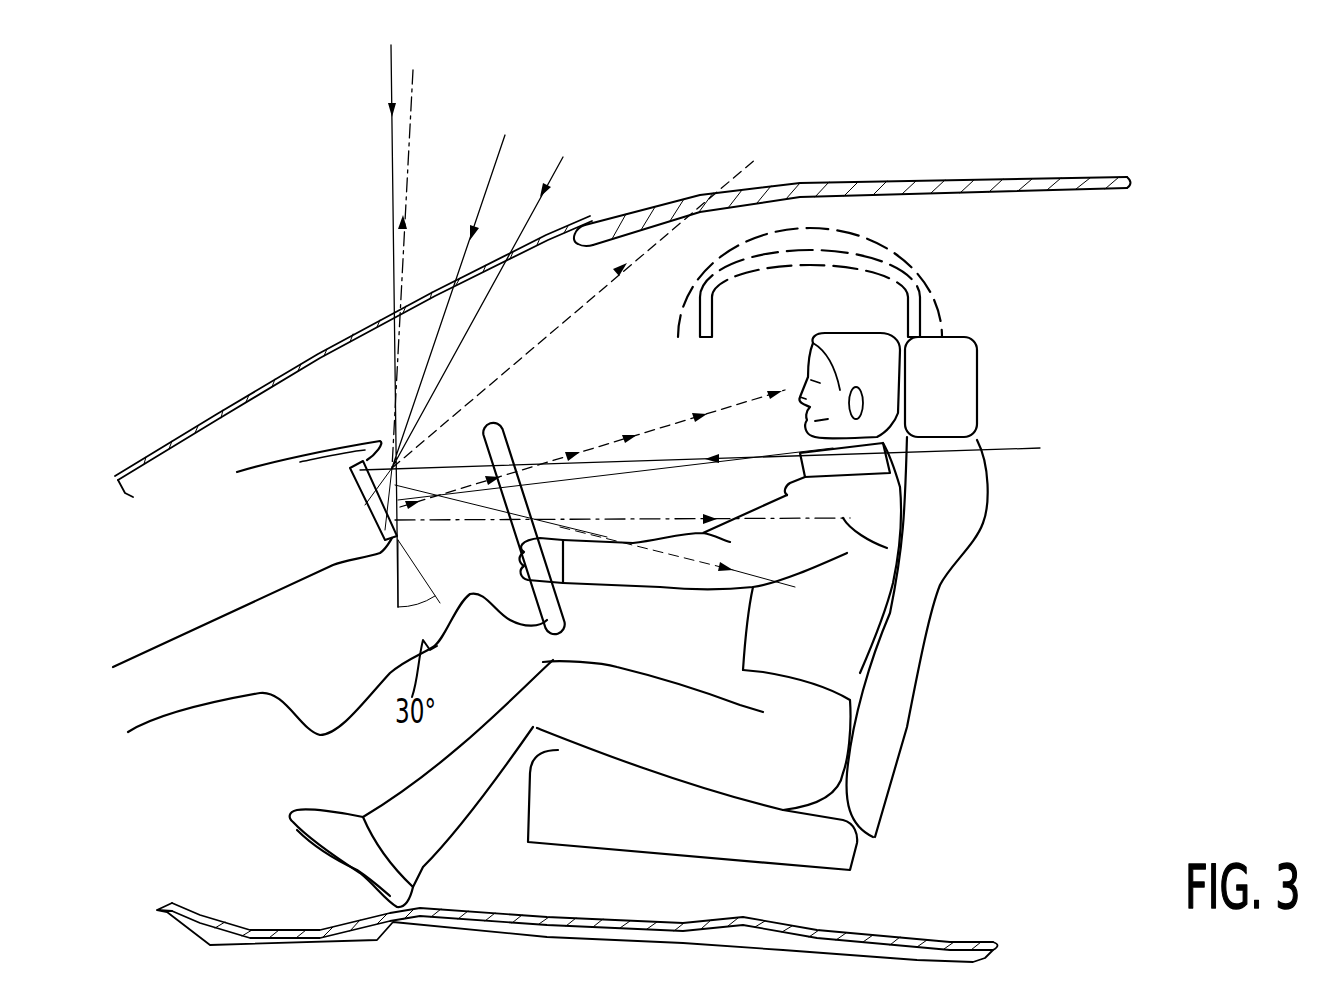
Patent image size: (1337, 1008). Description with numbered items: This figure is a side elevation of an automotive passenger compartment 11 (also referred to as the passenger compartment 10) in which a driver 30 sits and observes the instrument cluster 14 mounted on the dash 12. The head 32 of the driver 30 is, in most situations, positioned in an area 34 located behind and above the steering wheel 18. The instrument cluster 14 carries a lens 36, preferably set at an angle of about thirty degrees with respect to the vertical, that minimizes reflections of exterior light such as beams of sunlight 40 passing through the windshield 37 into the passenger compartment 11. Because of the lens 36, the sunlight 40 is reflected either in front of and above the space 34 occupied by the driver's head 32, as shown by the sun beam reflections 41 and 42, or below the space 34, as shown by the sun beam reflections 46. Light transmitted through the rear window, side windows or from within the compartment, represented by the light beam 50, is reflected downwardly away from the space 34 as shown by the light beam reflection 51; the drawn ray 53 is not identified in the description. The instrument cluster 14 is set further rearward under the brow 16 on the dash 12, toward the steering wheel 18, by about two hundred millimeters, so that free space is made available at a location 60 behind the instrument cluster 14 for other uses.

The passenger compartment 10 is at (532, 341).
The passenger compartment 11 is at (868, 317).
The dash 12 is at (437, 450).
The instrument cluster 14 is at (380, 507).
The brow 16 is at (375, 445).
The steering wheel 18 is at (513, 453).
The driver 30 is at (827, 650).
The head 32 is at (877, 344).
The area 34 is at (820, 307).
The lens 36 is at (400, 530).
The windshield 37 is at (198, 428).
The beams of sunlight 40 is at (392, 147).
The sun beam reflection 41 is at (397, 275).
The sun beam reflection 42 is at (757, 158).
The sun beam reflections 46 is at (897, 550).
The light beam 50 is at (1020, 448).
The light beam reflection 51 is at (668, 553).
The occupant line of sight 53 is at (738, 400).
The location 60 is at (318, 501).